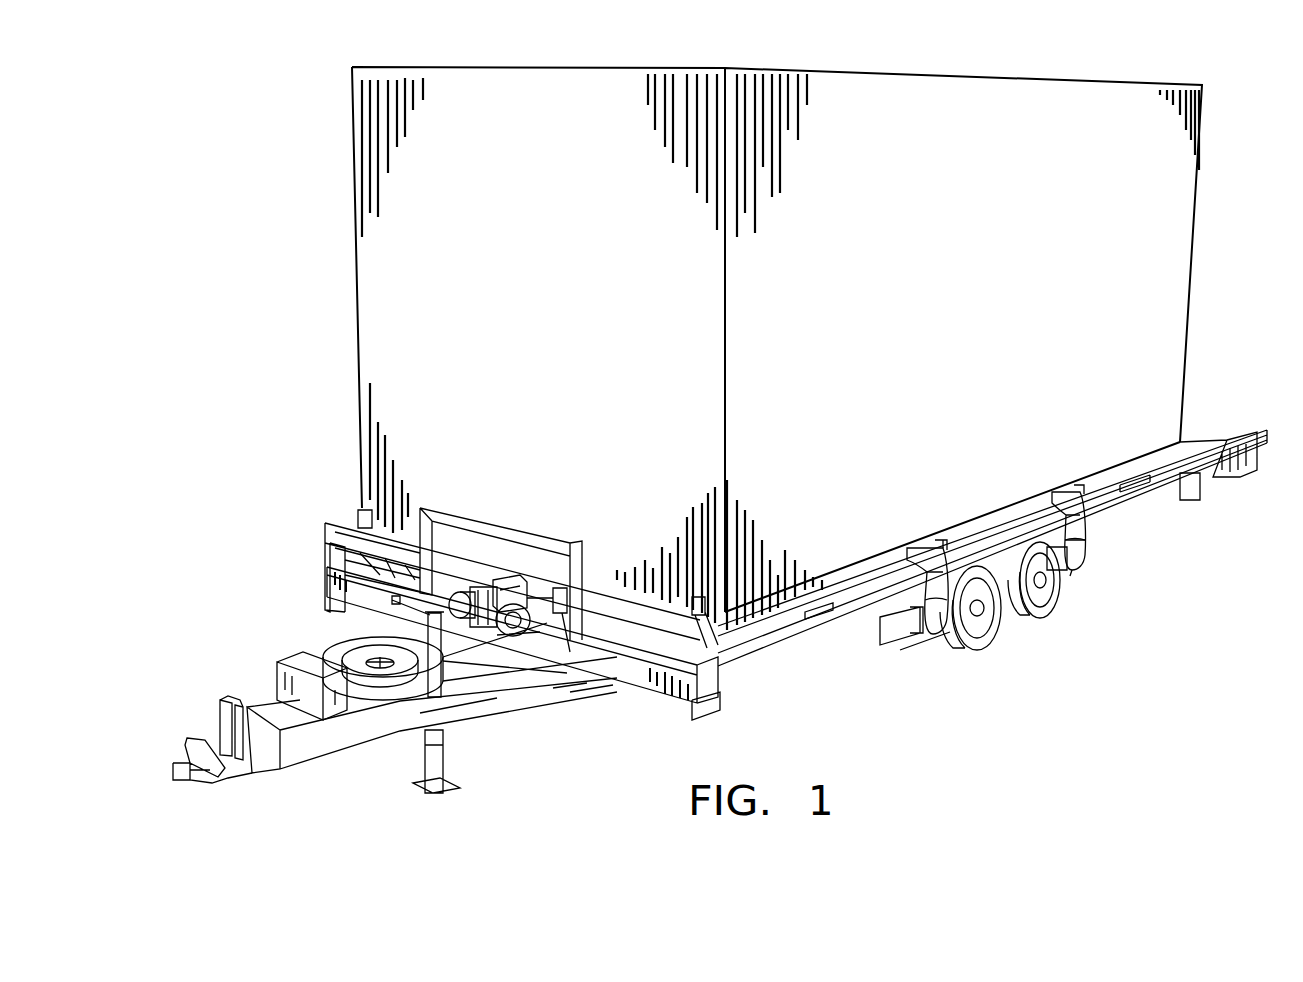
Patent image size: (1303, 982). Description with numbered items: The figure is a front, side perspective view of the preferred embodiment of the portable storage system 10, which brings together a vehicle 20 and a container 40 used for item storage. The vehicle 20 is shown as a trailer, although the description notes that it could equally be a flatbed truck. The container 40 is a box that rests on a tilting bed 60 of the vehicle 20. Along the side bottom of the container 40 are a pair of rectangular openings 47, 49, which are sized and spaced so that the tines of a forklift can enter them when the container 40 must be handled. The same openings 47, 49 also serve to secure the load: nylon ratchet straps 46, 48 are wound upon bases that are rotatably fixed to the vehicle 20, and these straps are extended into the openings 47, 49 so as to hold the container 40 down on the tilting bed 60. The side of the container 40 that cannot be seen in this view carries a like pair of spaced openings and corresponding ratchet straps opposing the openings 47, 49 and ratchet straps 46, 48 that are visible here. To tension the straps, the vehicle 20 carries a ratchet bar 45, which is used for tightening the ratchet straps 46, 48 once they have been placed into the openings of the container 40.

The portable storage system 10 is at (1141, 671).
The vehicle 20 is at (725, 681).
The container 40 is at (979, 295).
The ratchet bar 45 is at (780, 627).
The ratchet strap 46 is at (937, 612).
The rectangular opening 47 is at (912, 555).
The ratchet strap 48 is at (1078, 535).
The rectangular opening 49 is at (1055, 497).
The tilting bed 60 is at (1137, 483).